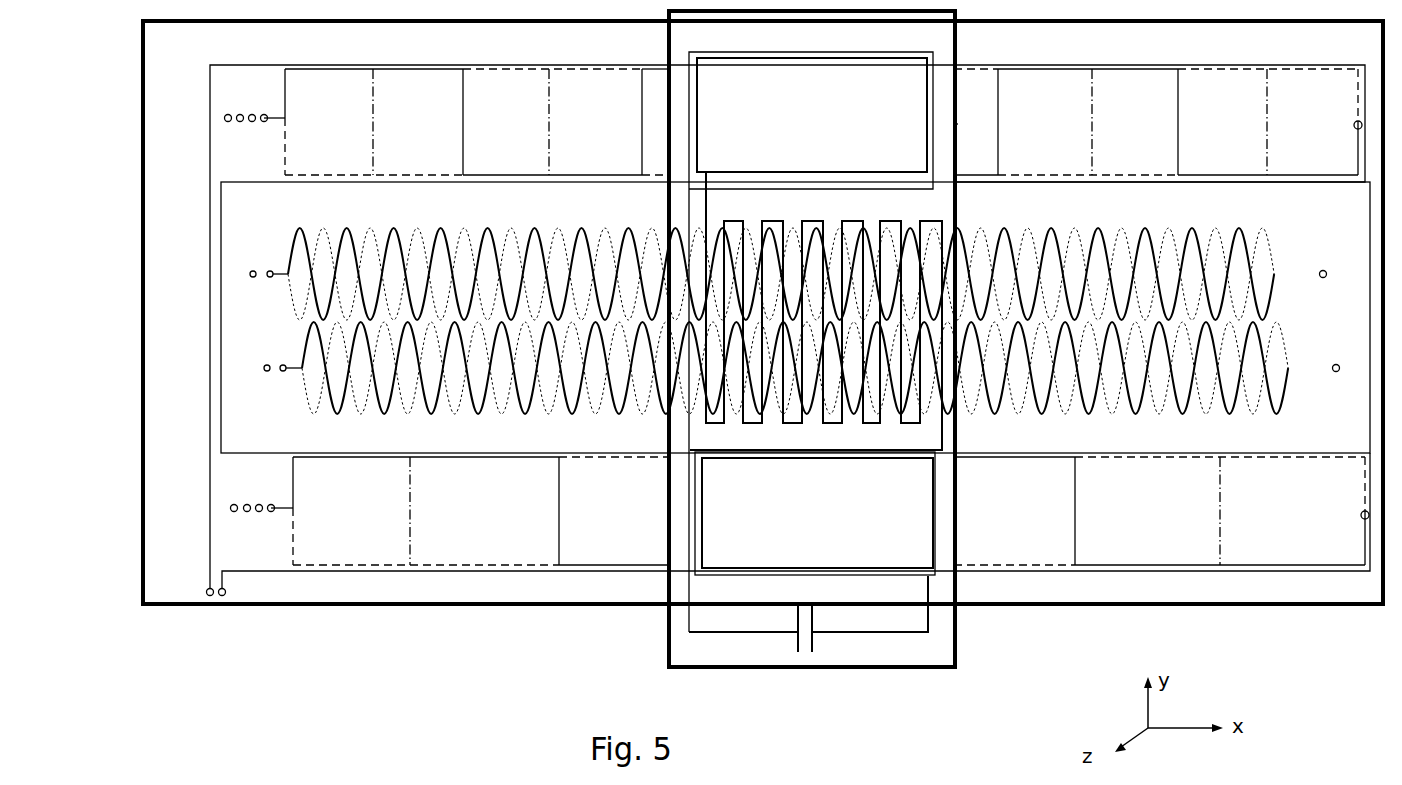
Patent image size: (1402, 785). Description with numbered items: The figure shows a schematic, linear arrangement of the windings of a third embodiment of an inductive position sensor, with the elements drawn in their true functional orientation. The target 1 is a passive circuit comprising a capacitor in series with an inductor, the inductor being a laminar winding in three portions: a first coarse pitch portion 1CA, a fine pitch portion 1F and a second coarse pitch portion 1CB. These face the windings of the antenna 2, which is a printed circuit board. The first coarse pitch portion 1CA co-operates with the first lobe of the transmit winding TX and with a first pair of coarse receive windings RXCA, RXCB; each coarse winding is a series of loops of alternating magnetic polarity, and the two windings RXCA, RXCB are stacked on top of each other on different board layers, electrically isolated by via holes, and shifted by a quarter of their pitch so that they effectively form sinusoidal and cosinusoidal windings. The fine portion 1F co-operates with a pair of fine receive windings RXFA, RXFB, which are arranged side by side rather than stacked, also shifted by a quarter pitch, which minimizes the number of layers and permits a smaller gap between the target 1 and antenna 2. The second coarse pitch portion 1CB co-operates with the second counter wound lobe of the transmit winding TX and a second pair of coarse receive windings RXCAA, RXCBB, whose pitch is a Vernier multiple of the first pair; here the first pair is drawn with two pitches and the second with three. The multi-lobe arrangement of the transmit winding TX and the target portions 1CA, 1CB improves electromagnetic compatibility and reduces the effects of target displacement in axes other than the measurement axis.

The target 1 is at (710, 650).
The antenna 2 is at (547, 593).
The first coarse pitch portion 1CA is at (811, 342).
The second coarse pitch portion 1CB is at (812, 552).
The fine pitch portion of the target winding 1F is at (816, 311).
The transmit winding TX is at (207, 424).
The first coarse receive winding RXCA is at (712, 122).
The first coarse receive winding RXCB is at (298, 133).
The fine receive winding RXFA is at (300, 270).
The fine receive winding RXFB is at (302, 350).
The second coarse receive winding RXCAA is at (707, 511).
The second coarse receive winding RXCBB is at (297, 537).